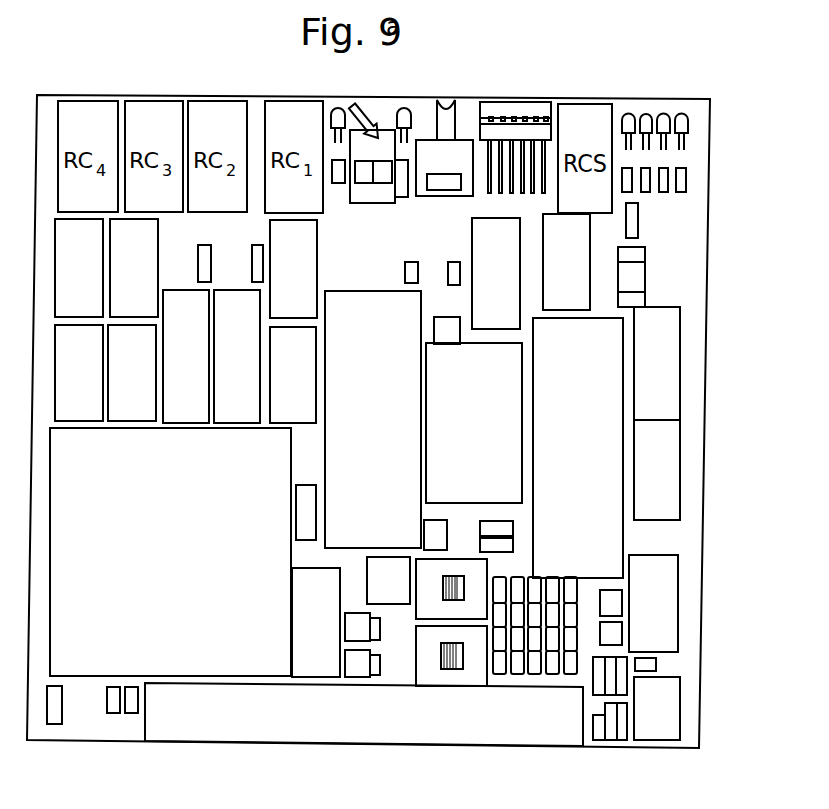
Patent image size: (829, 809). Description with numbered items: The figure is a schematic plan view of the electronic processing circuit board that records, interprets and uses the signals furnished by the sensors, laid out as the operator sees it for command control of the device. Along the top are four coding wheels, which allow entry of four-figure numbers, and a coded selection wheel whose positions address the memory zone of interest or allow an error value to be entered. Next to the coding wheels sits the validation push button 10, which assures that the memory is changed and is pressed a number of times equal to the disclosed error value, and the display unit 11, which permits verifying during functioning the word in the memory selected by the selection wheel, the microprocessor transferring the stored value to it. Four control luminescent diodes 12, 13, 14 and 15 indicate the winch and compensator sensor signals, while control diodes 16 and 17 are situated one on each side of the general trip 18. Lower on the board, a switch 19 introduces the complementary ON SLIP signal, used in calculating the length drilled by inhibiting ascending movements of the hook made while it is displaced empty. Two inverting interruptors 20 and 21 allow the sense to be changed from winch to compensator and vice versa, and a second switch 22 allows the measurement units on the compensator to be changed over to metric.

The push button 10 is at (447, 118).
The display unit 11 is at (513, 107).
The control luminescent diode 12 is at (628, 120).
The control luminescent diode 13 is at (644, 120).
The control luminescent diode 14 is at (665, 122).
The control luminescent diode 15 is at (683, 122).
The control diode 16 is at (340, 113).
The control diode 17 is at (406, 118).
The general trip 18 is at (382, 150).
The switch 19 is at (632, 283).
The inverting interruptor 20 is at (430, 602).
The inverting interruptor 21 is at (452, 676).
The second switch 22 is at (614, 605).